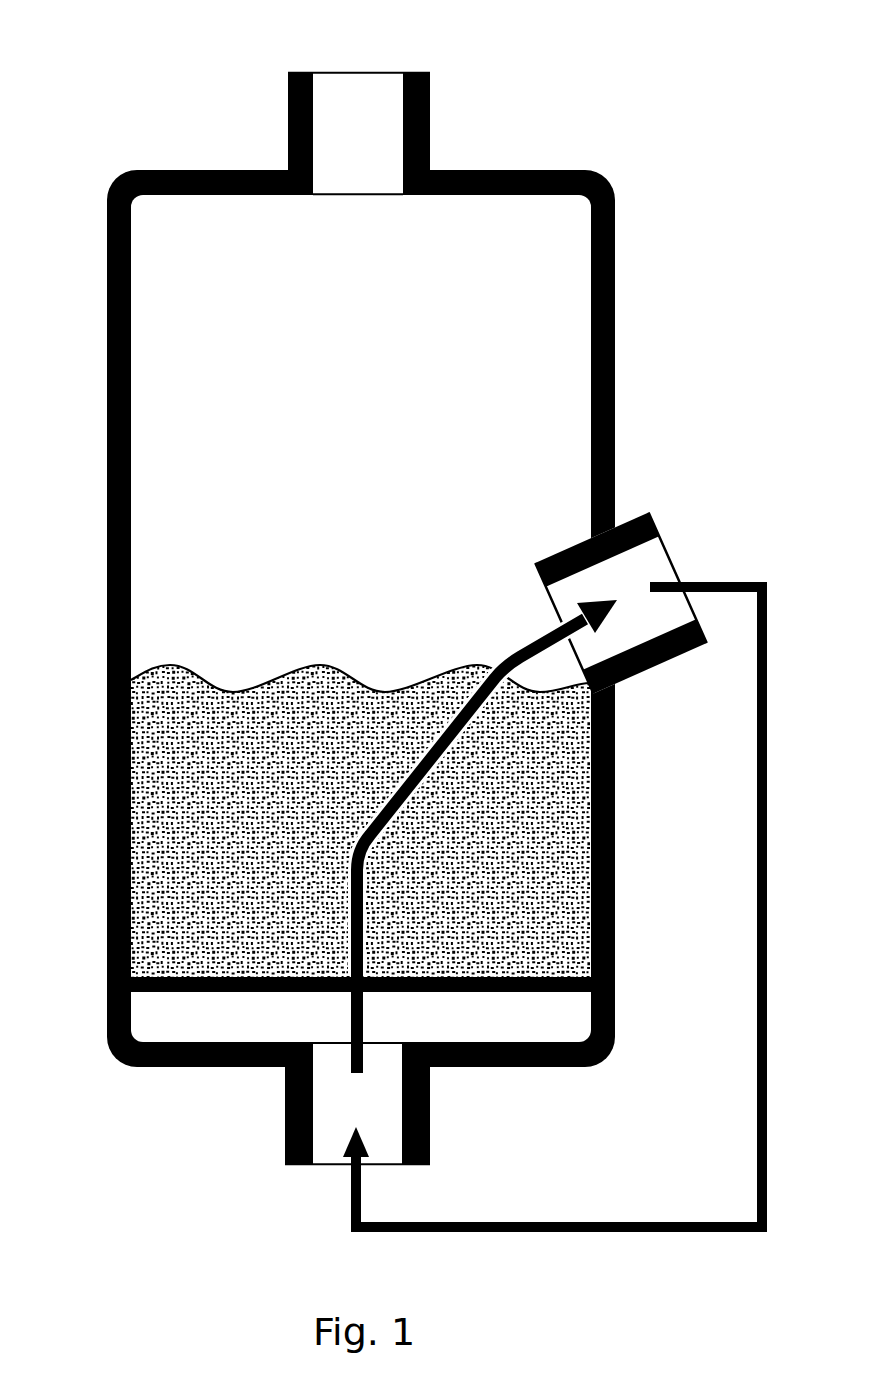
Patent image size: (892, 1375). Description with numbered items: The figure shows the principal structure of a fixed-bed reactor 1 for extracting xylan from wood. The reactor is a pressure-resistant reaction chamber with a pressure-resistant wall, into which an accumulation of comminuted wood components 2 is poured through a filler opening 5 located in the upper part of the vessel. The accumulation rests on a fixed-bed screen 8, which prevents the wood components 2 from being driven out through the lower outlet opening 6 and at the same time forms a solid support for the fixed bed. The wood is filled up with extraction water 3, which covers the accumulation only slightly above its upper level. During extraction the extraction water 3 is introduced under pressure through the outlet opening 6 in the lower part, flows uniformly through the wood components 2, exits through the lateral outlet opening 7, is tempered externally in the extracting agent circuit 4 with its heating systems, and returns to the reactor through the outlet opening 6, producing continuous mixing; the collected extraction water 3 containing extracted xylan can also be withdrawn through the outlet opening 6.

The fixed-bed reactor 1 is at (642, 157).
The comminuted wood components 2 is at (373, 707).
The extraction water 3 is at (477, 673).
The extracting agent circuit 4 is at (757, 981).
The filler opening 5 is at (340, 127).
The outlet opening 6 is at (335, 1075).
The outlet opening 7 is at (647, 563).
The fixed-bed screen 8 is at (225, 993).